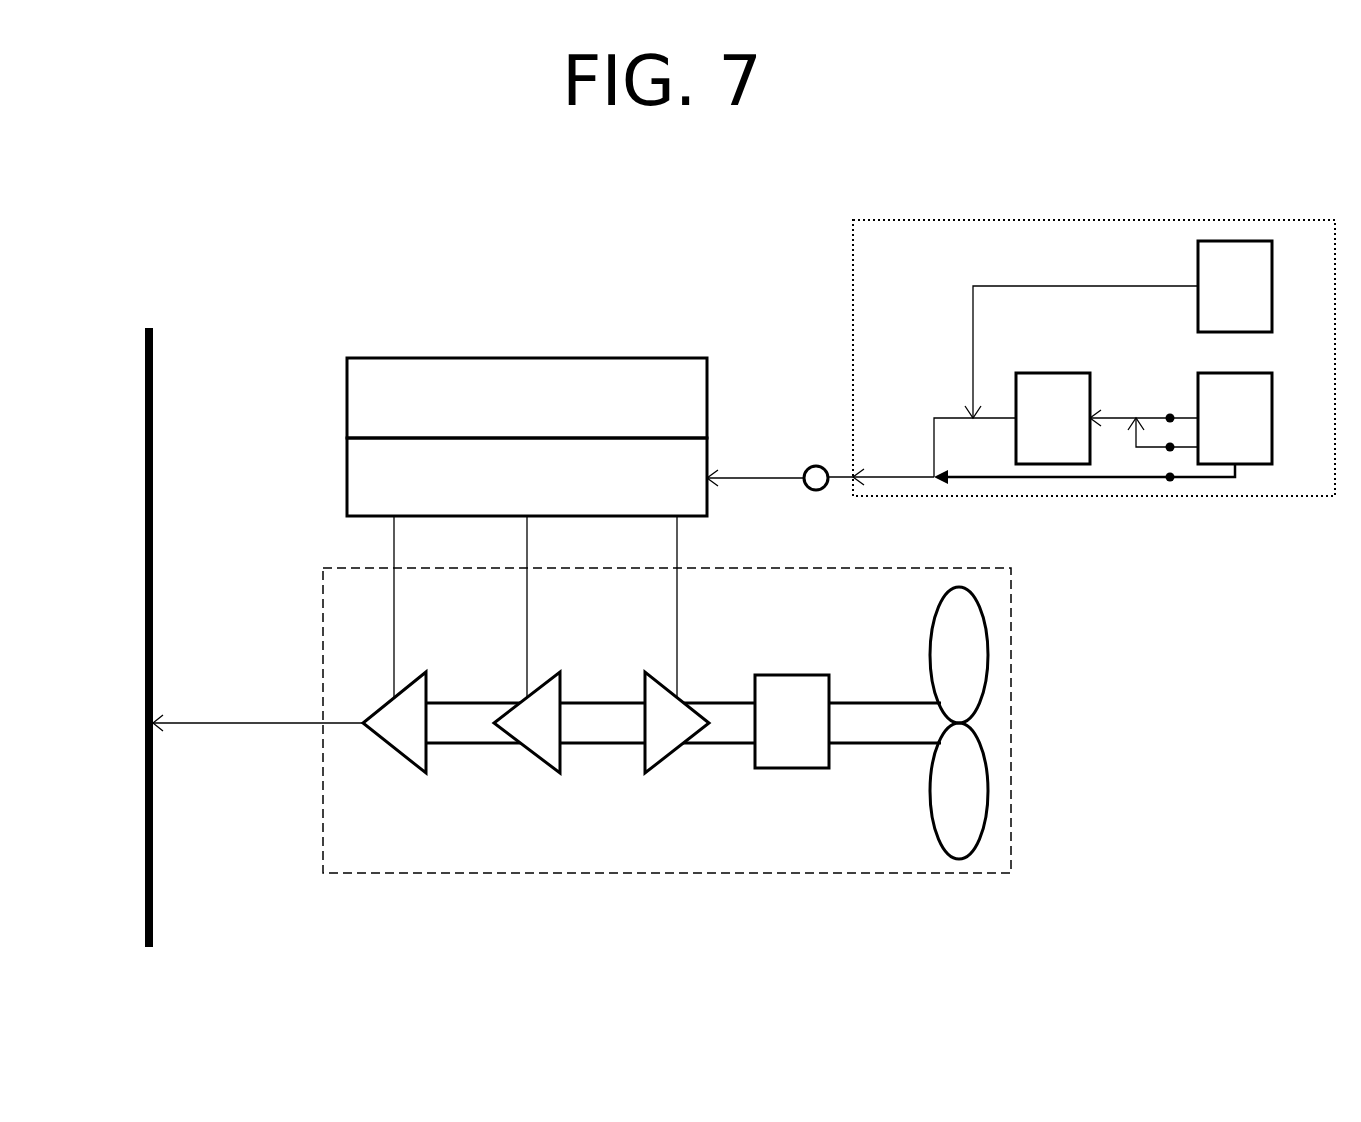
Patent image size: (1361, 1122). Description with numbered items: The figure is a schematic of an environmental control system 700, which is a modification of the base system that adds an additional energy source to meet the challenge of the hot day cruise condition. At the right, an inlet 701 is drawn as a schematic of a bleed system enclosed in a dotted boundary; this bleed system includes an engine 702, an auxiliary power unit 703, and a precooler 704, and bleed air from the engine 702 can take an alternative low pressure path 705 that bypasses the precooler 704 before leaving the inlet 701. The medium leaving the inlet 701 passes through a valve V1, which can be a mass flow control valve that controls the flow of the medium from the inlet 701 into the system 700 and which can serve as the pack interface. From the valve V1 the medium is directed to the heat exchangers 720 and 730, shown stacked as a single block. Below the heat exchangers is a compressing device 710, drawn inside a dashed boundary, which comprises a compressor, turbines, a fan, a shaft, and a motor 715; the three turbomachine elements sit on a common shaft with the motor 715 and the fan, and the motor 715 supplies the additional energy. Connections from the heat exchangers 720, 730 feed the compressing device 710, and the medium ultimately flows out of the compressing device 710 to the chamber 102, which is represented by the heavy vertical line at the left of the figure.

The environmental control system 700 is at (204, 165).
The chamber 102 is at (147, 327).
The inlet 701 is at (1094, 362).
The engine 702 is at (1256, 431).
The auxiliary power unit 703 is at (1256, 301).
The precooler 704 is at (1074, 431).
The control signal line 705 is at (1202, 480).
The compressing device 710 is at (667, 752).
The motor 715 is at (813, 735).
The heat exchanger 720 is at (548, 489).
The heat exchanger 730 is at (548, 414).
The valve V1 is at (807, 467).